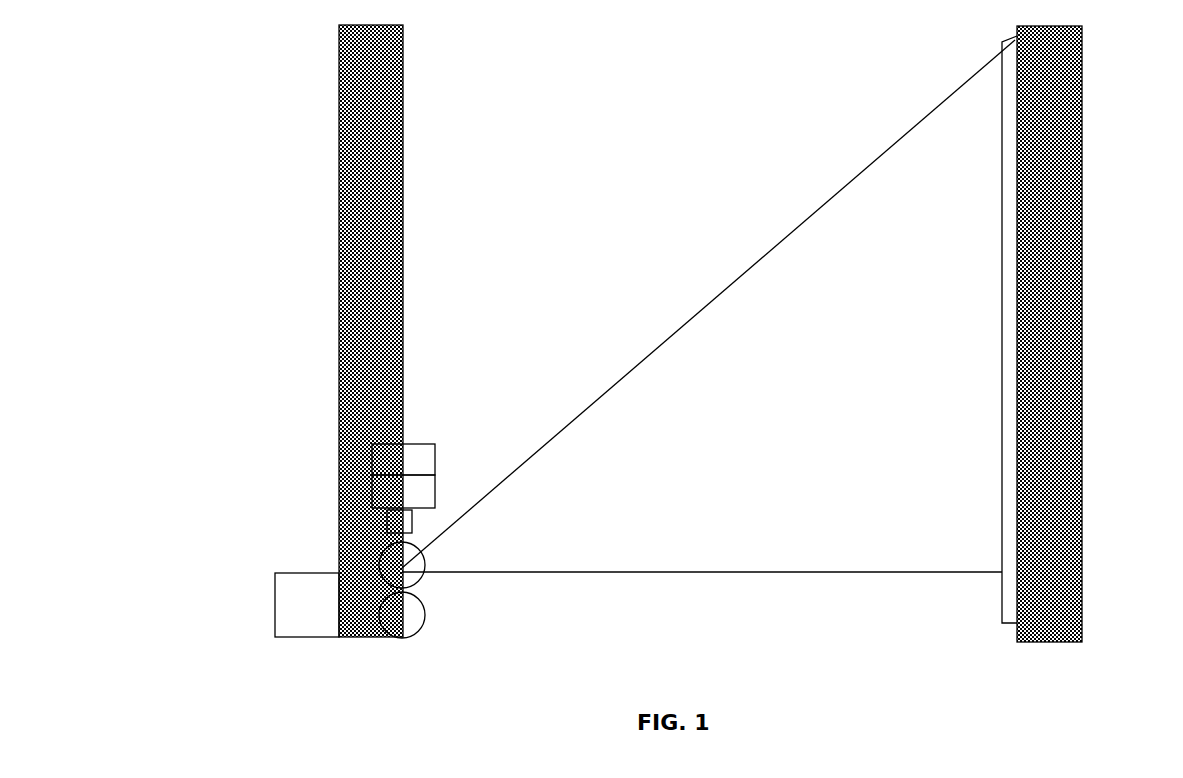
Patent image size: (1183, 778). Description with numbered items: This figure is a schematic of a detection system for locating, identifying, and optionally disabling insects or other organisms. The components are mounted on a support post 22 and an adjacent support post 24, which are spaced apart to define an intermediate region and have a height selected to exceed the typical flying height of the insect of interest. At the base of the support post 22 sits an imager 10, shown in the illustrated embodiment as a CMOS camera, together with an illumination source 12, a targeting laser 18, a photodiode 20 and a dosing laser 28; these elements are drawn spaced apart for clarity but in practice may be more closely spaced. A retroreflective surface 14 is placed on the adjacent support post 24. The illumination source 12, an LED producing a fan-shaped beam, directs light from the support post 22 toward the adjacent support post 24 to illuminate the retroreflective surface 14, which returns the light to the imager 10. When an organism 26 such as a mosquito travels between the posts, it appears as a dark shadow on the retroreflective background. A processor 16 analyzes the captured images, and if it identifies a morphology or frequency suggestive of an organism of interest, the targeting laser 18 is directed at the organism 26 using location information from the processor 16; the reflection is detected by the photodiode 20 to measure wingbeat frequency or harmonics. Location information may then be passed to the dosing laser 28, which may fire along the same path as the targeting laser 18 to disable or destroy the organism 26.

The imager 10 is at (412, 618).
The illumination source 12 is at (418, 580).
The retroreflective surface 14 is at (1010, 590).
The processor 16 is at (285, 605).
The targeting laser 18 is at (430, 486).
The photodiode 20 is at (405, 516).
The support post 22 is at (382, 145).
The adjacent support post 24 is at (1065, 172).
The organism 26 is at (787, 372).
The dosing laser 28 is at (430, 453).